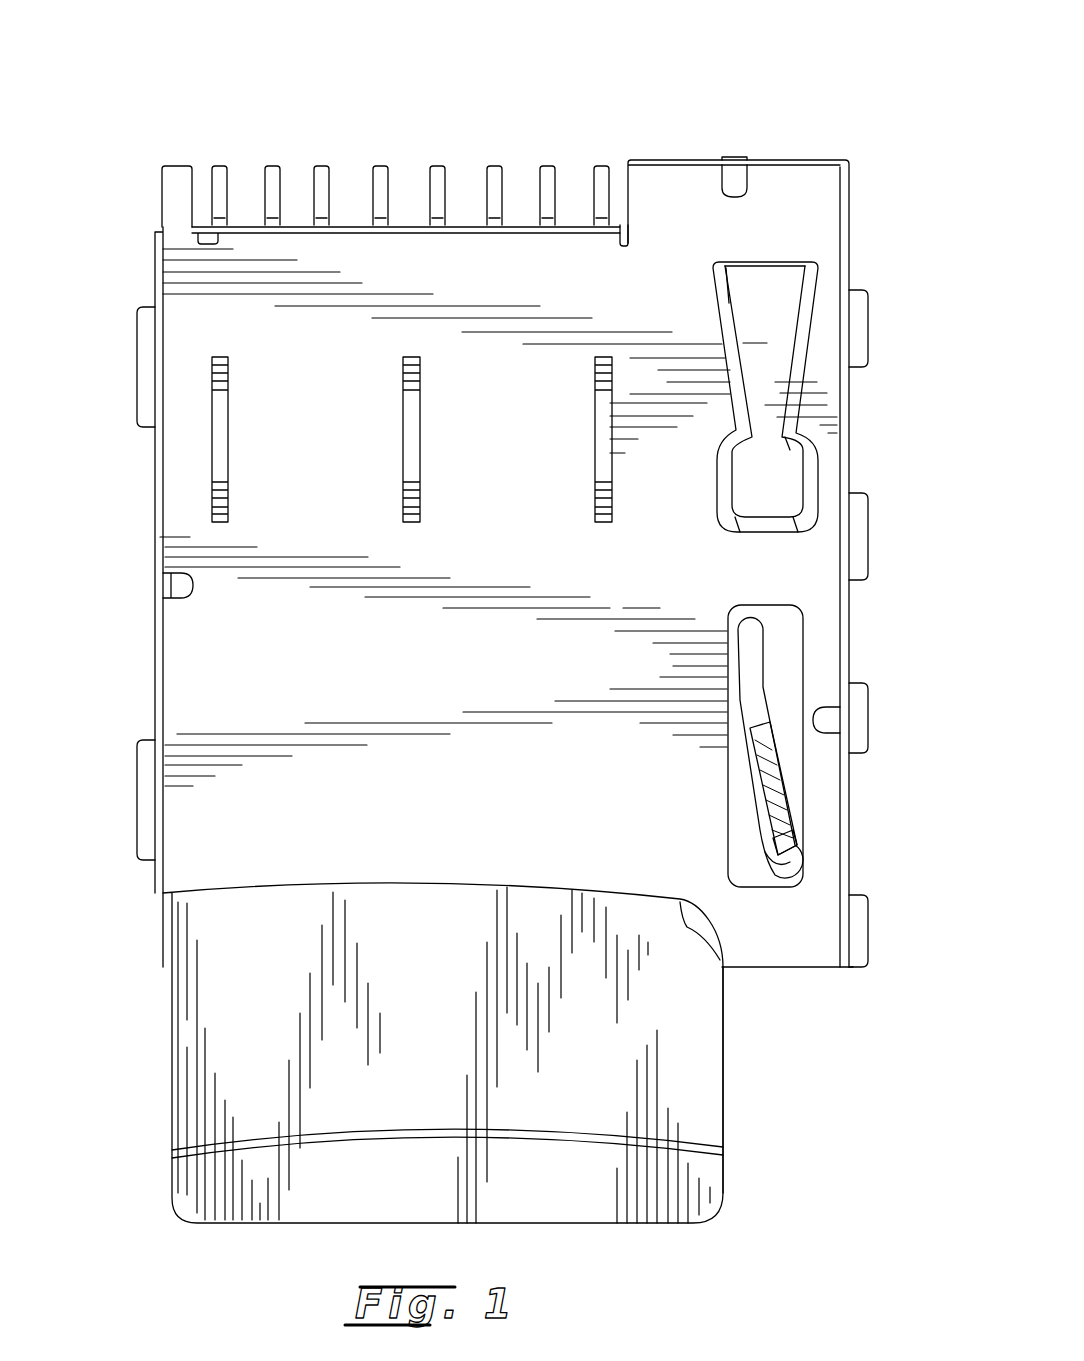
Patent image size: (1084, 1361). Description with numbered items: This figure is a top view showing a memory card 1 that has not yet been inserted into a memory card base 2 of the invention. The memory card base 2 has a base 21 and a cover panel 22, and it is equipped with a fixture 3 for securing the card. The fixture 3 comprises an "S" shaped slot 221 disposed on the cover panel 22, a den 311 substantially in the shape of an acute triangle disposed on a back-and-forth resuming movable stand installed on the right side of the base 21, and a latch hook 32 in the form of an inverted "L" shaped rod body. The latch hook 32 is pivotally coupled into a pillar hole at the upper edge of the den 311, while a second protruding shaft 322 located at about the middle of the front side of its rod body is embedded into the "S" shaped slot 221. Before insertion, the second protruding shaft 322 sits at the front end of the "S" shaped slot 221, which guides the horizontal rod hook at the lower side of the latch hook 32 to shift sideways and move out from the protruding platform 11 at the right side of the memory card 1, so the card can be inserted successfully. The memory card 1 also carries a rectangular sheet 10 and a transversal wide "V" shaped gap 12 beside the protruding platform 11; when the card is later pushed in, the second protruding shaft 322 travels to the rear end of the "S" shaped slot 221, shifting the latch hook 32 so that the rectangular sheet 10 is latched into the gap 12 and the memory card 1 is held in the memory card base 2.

The memory card 1 is at (726, 1100).
The rectangular sheet 10 is at (264, 1046).
The protruding platform 11 is at (726, 1057).
The transversal wide "V" shaped gap 12 is at (690, 920).
The memory card base 2 is at (563, 148).
The base 21 is at (856, 384).
The cover panel 22 is at (846, 240).
The "S" shaped slot 221 is at (786, 729).
The fixture 3 is at (768, 716).
The den 311 is at (790, 832).
The latch hook 32 is at (801, 836).
The second protruding shaft 322 is at (795, 860).